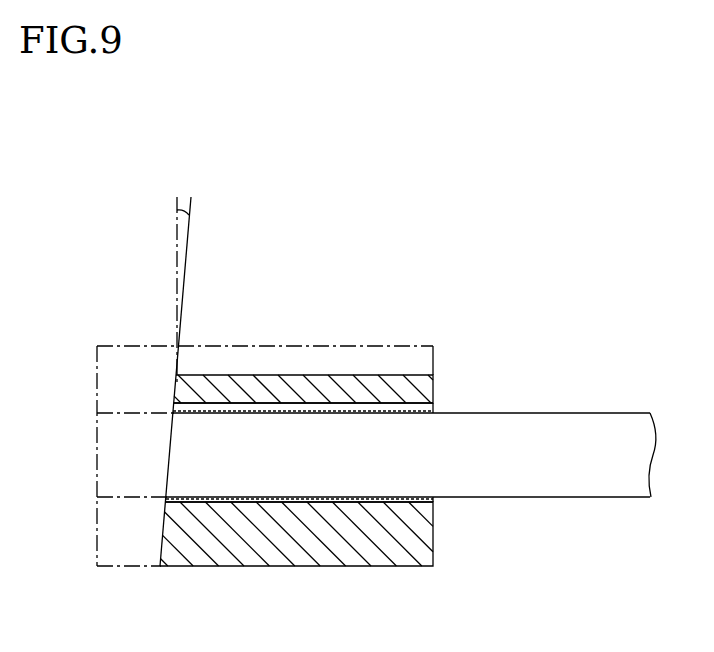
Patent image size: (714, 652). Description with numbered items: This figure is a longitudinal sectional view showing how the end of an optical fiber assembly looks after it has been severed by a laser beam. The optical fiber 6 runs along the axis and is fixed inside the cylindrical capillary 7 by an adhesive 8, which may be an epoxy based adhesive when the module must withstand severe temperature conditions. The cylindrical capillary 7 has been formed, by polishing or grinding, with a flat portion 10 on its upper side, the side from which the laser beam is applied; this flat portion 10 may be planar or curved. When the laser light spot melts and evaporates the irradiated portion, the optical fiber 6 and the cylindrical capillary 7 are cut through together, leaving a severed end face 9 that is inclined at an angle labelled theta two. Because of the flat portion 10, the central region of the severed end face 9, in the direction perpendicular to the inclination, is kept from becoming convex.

The optical fiber 6 is at (526, 438).
The cylindrical capillary 7 is at (277, 545).
The adhesive 8 is at (362, 503).
The severed end face 9 is at (168, 461).
The flat portion 10 is at (341, 375).